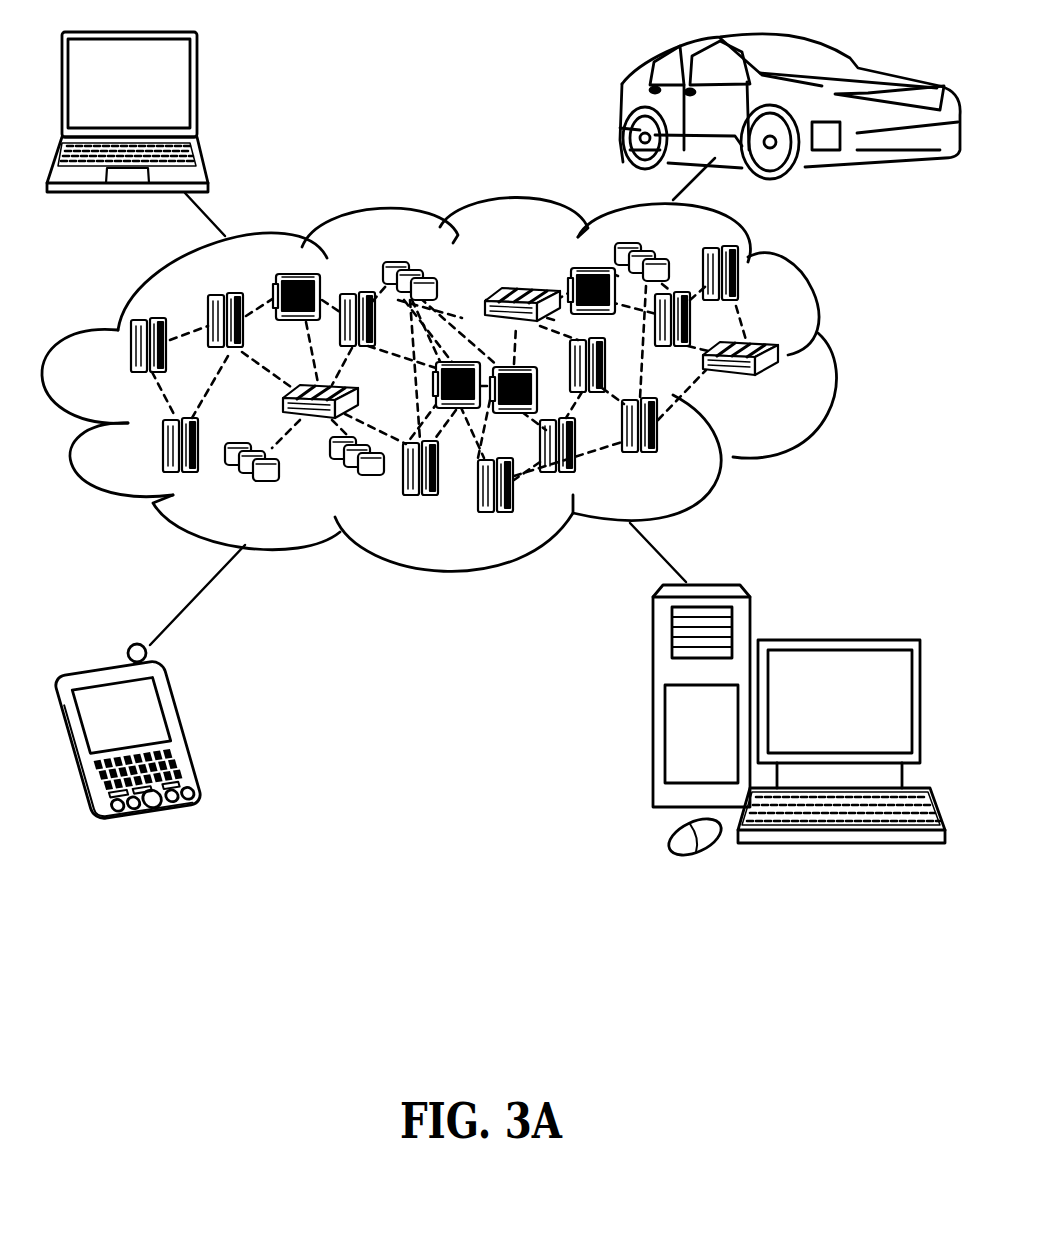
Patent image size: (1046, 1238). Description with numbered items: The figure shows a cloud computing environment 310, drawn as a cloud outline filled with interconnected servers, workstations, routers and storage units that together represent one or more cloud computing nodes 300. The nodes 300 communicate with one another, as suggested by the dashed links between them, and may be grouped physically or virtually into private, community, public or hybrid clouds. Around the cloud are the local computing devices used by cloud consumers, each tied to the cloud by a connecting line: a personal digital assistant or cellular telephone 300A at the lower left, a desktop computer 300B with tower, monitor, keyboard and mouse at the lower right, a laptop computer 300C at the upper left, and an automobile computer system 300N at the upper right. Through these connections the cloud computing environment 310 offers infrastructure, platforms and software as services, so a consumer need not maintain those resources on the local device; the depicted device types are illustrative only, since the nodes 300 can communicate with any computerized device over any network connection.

The cloud computing nodes 300 is at (786, 391).
The cloud computing environment 310 is at (837, 358).
The personal digital assistant (PDA) or cellular telephone 300A is at (183, 728).
The desktop computer 300B is at (835, 638).
The laptop computer 300C is at (197, 89).
The automobile computer system 300N is at (620, 105).